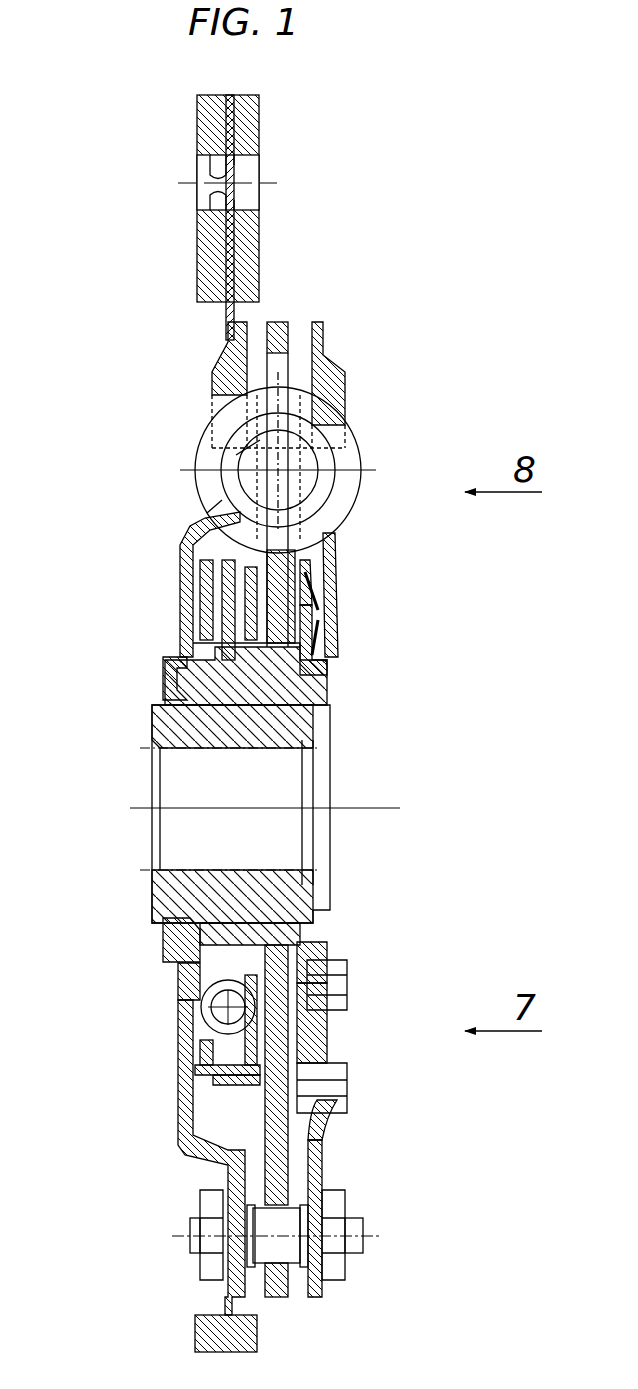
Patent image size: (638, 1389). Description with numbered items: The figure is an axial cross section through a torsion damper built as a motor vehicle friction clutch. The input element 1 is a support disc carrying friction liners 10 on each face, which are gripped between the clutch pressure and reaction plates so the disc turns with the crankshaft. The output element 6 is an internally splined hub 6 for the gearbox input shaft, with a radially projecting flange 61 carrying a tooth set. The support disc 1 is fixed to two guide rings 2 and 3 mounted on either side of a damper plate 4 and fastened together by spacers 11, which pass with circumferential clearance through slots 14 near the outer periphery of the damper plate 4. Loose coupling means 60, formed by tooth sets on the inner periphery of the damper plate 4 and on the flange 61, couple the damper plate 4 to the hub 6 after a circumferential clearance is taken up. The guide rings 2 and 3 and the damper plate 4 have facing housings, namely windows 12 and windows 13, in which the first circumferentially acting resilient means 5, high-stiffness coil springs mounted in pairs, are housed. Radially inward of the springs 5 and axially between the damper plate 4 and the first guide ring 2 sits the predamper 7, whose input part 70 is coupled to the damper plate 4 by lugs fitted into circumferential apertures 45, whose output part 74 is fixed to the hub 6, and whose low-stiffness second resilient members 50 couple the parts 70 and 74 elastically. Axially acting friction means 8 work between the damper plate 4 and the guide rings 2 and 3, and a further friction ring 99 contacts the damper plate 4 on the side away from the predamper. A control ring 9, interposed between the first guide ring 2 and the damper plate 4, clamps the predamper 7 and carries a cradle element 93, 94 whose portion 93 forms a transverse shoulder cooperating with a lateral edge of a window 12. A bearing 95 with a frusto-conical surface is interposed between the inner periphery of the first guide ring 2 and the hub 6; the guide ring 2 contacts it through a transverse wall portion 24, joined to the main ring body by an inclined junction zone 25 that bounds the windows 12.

The input element 1 is at (200, 325).
The first guide ring 2 is at (185, 1143).
The second guide ring 3 is at (310, 1292).
The damper plate 4 is at (283, 322).
The first circumferentially acting resilient means 5 is at (345, 448).
The output element 6 is at (130, 718).
The predamper 7 is at (200, 1080).
The axially acting friction means 8 is at (322, 578).
The control ring 9 is at (210, 577).
The friction liners 10 is at (215, 262).
The spacers 11 is at (360, 1233).
The housings (windows) of the guide rings 12 is at (213, 403).
The housings (windows) of the damper plate 13 is at (335, 375).
The slot 14 is at (285, 1200).
The transversely oriented wall portion 24 is at (180, 970).
The junction zone 25 is at (190, 535).
The circumferential aperture 45 is at (230, 1105).
The second resilient members 50 is at (213, 1018).
The loose coupling means 60 is at (250, 952).
The flange 61 is at (270, 690).
The input part of the predamper 70 is at (250, 607).
The output part of the predamper 74 is at (195, 650).
The cradle element portion 93 is at (236, 455).
The cradle element 94 is at (207, 513).
The bearing 95 is at (167, 927).
The further friction ring 99 is at (300, 625).